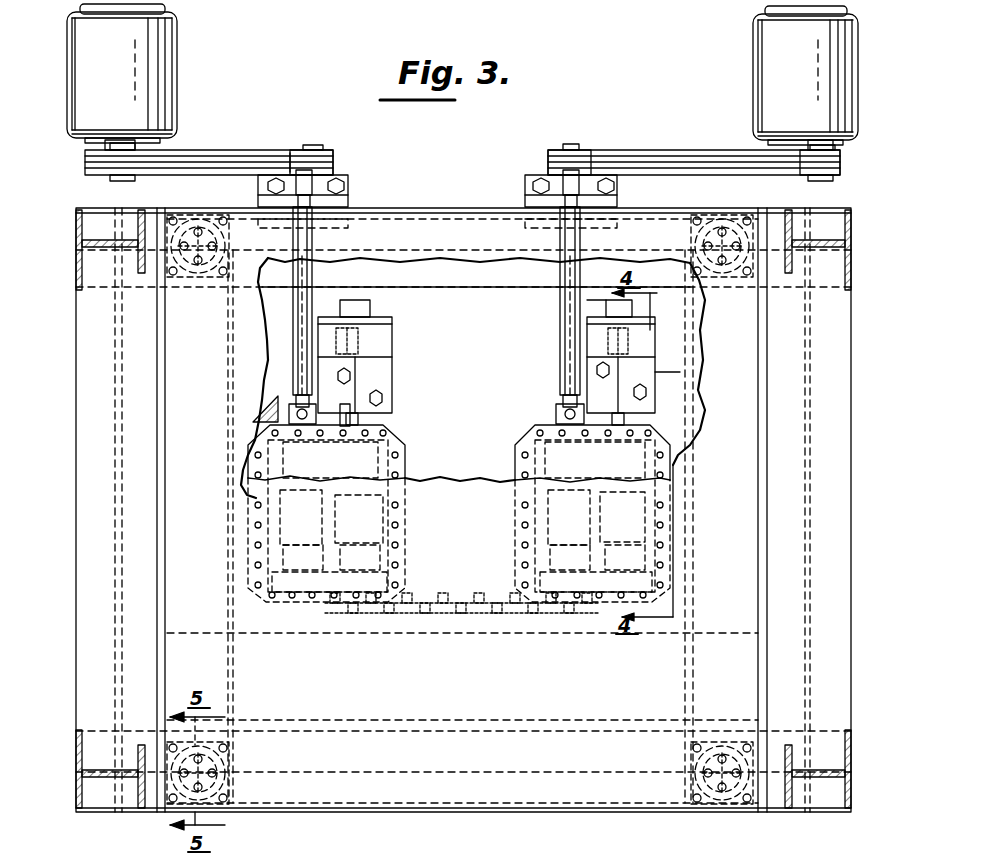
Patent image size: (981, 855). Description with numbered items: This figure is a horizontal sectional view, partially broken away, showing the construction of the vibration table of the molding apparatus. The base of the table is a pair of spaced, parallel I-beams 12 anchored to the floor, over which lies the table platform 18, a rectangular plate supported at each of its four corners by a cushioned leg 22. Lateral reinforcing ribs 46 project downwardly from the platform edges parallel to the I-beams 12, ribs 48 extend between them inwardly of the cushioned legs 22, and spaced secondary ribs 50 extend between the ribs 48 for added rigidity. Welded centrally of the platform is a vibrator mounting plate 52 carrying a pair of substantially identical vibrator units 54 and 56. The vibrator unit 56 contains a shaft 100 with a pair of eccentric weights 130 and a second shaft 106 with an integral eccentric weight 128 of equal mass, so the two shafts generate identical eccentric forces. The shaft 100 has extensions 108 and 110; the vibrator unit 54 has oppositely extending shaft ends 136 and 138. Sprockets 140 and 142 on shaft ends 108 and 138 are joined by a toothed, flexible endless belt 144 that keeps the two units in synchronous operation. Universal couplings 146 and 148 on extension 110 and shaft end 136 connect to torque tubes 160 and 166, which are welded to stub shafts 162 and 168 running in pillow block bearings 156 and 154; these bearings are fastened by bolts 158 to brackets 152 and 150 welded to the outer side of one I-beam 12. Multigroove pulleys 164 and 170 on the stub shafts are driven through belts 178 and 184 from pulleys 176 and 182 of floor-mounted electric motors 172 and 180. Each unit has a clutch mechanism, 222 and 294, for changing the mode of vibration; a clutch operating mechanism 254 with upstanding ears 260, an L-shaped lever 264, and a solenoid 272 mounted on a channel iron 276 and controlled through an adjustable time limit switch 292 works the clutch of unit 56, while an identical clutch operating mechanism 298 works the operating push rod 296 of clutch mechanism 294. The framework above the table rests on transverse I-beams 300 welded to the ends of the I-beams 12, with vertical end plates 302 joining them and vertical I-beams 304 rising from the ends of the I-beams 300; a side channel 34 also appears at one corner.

The I-beams 12 is at (470, 275).
The table platform 18 is at (610, 854).
The cushioned leg 22 is at (200, 290).
The side channel 34 is at (830, 785).
The lateral reinforcing ribs 46 is at (433, 210).
The ribs 48 is at (160, 660).
The secondary ribs 50 is at (714, 380).
The vibrator mounting plate 52 is at (250, 430).
The vibrator unit 54 is at (405, 445).
The vibrator unit 56 is at (525, 428).
The shaft 100 is at (588, 540).
The second shaft 106 is at (635, 555).
The extension 108 is at (560, 620).
The extension 110 is at (515, 460).
The eccentric weight 128 is at (672, 515).
The eccentric weights 130 is at (525, 500).
The shaft end 136 is at (312, 458).
The shaft end 138 is at (408, 550).
The sprocket 140 is at (578, 620).
The sprocket 142 is at (355, 615).
The toothed flexible endless belt 144 is at (448, 600).
The universal coupling 146 is at (555, 420).
The universal coupling 148 is at (262, 395).
The bracket 150 is at (350, 203).
The bracket 152 is at (525, 203).
The pillow block bearing 154 is at (330, 180).
The pillow block bearing 156 is at (617, 192).
The bolts 158 is at (348, 185).
The torque tube 160 is at (560, 315).
The stub shaft 162 is at (578, 146).
The multigroove pulley 164 is at (560, 150).
The torque tube 166 is at (312, 276).
The stub shaft 168 is at (304, 148).
The multigroove pulley 170 is at (286, 150).
The electric motor 172 is at (753, 62).
The pulley 176 is at (830, 180).
The endless belts 178 is at (683, 158).
The motor 180 is at (177, 75).
The pulley 182 is at (140, 181).
The belts 184 is at (208, 160).
The clutch mechanism 222 is at (590, 500).
The clutch operating mechanism 254 is at (662, 343).
The upstanding ears 260 is at (615, 403).
The L-shaped lever 264 is at (622, 398).
The solenoid 272 is at (692, 362).
The channel iron 276 is at (587, 333).
The adjustable time limit switch 292 is at (600, 300).
The clutch mechanism 294 is at (405, 470).
The operating push rod 296 is at (395, 428).
The clutch operating mechanism 298 is at (392, 372).
The transverse I-beams 300 is at (148, 600).
The vertical end plates 302 is at (76, 290).
The vertical I-beams 304 is at (110, 255).